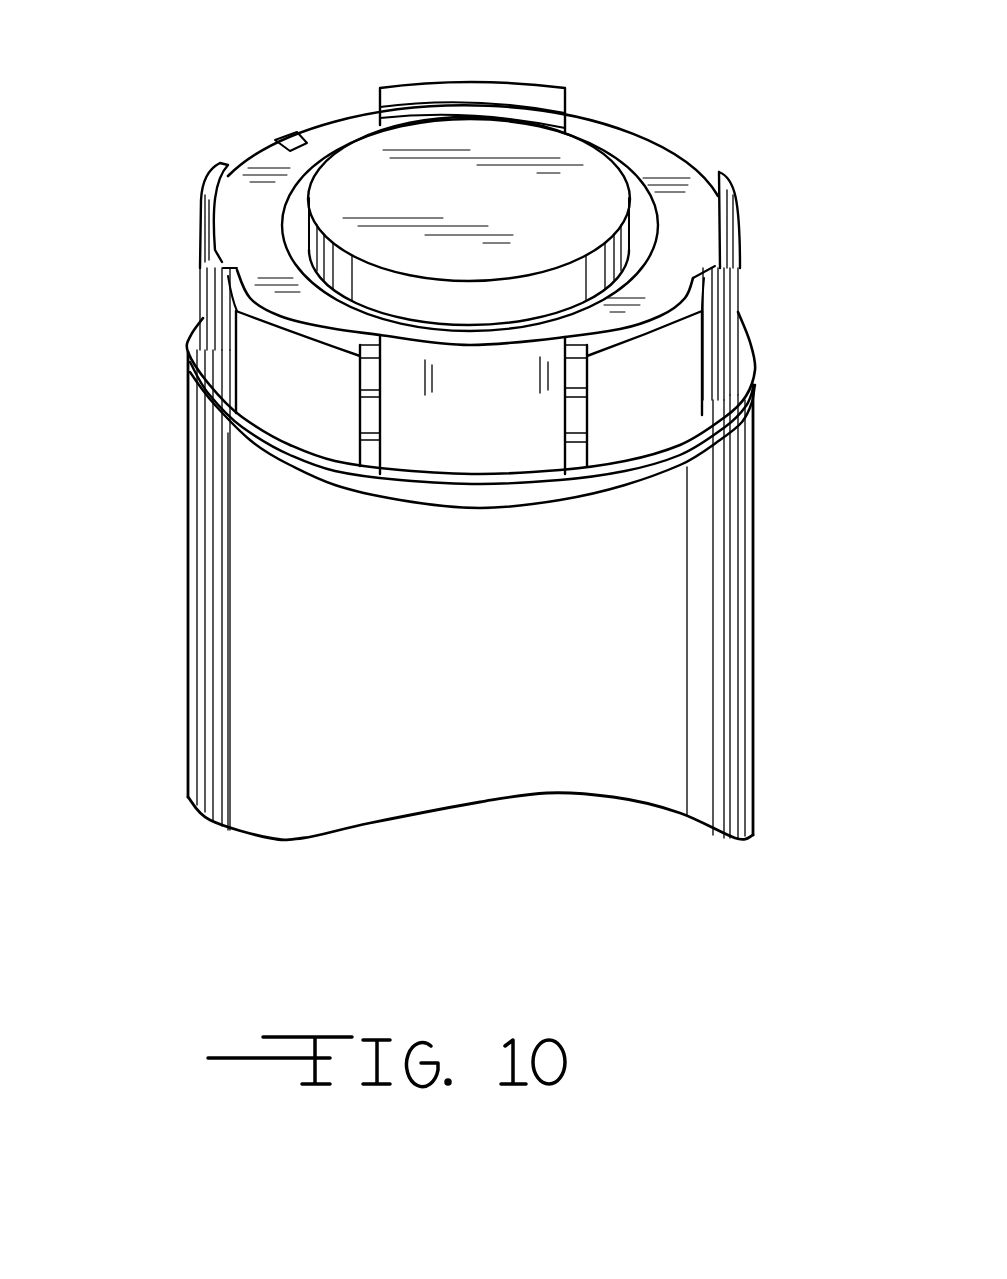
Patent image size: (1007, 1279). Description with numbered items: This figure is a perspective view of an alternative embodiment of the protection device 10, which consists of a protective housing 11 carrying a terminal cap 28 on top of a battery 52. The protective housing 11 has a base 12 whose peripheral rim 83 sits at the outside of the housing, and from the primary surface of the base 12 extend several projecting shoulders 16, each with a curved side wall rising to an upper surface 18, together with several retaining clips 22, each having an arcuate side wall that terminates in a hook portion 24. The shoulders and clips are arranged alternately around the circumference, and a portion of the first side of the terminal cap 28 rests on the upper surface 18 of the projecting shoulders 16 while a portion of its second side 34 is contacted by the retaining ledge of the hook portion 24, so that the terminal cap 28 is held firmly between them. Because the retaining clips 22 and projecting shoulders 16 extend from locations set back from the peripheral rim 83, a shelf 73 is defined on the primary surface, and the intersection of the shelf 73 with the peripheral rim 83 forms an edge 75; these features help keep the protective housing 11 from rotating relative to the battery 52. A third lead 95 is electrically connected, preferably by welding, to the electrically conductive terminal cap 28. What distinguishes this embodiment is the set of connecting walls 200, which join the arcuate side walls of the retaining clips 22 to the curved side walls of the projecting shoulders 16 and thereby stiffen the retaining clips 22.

The protection device 10 is at (465, 576).
The protective housing 11 is at (478, 242).
The base 12 is at (410, 493).
The projecting shoulder 16 is at (320, 401).
The upper surface 18 is at (345, 348).
The retaining clip 22 is at (520, 95).
The hook portion 24 is at (228, 165).
The terminal cap 28 is at (663, 160).
The second side 34 is at (352, 113).
The battery 52 is at (535, 687).
The shelf 73 is at (193, 363).
The edge 75 is at (490, 492).
The peripheral rim 83 is at (600, 487).
The third lead 95 is at (290, 130).
The connecting walls 200 is at (233, 390).